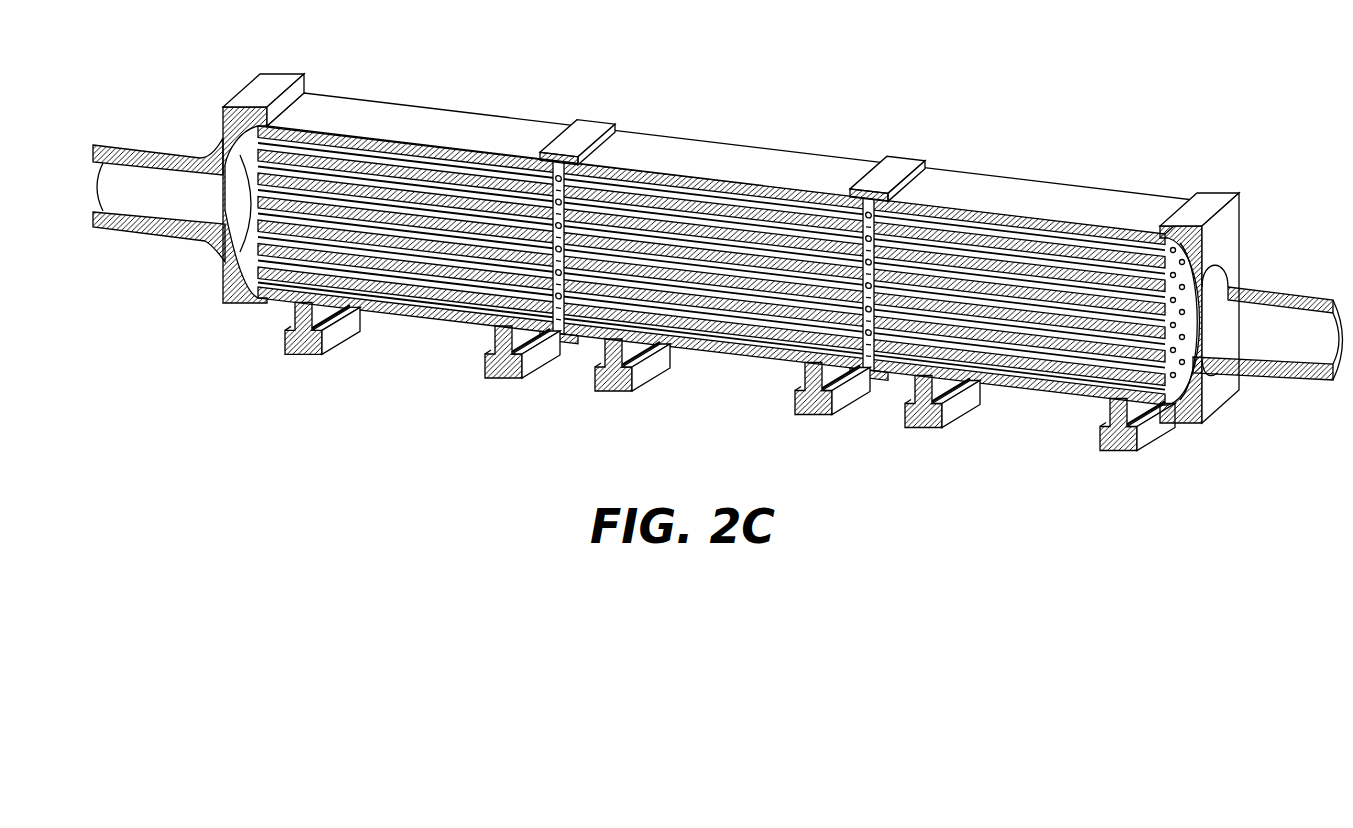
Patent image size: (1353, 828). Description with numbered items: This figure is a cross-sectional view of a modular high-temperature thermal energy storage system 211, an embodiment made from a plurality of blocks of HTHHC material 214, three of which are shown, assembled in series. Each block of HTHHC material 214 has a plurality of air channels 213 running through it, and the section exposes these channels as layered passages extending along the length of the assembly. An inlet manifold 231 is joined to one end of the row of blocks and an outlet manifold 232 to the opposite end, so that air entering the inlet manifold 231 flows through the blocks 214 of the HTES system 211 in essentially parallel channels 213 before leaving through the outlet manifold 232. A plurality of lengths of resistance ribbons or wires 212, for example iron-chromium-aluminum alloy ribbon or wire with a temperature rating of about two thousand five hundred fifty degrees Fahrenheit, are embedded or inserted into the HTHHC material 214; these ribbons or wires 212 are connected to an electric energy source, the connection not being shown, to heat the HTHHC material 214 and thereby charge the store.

The modular HTES system 211 is at (792, 65).
The resistance ribbons or wires 212 is at (405, 153).
The air channels 213 is at (470, 170).
The blocks of HTHHC material 214 is at (340, 100).
The inlet manifold 231 is at (140, 158).
The outlet manifold 232 is at (1283, 300).